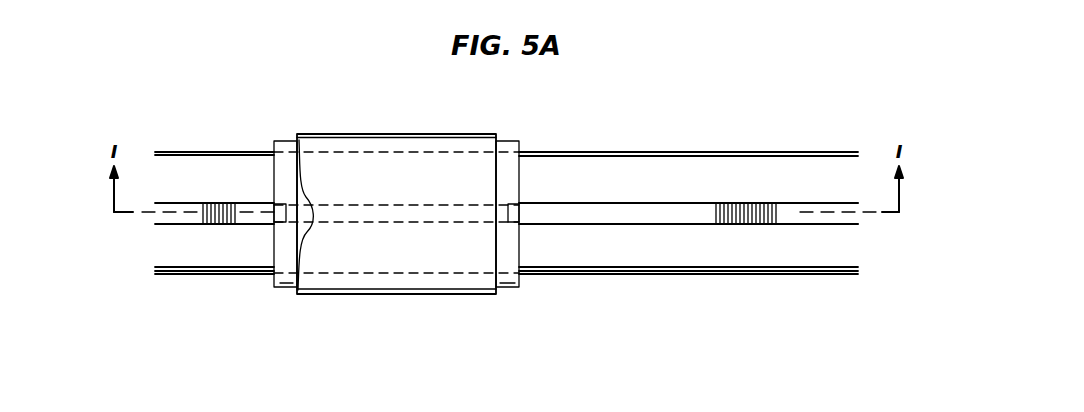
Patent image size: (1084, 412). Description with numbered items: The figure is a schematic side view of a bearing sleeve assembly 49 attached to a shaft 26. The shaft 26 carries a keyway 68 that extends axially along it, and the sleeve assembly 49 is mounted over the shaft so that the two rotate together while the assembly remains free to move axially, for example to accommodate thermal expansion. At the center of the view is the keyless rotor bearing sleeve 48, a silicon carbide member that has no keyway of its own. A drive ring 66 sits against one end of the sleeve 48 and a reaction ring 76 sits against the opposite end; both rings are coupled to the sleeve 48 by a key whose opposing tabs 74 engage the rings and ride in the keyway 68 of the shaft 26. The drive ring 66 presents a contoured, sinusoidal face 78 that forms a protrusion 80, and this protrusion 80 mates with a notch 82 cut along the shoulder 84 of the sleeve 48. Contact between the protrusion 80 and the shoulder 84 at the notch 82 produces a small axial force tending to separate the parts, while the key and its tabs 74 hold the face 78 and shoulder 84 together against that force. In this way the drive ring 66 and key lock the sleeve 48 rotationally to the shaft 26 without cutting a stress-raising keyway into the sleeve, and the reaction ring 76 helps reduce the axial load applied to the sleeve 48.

The shaft 26 is at (762, 152).
The keyless rotor bearing sleeve 48 is at (455, 133).
The sleeve assembly 49 is at (516, 117).
The drive ring 66 is at (288, 140).
The keyway 68 is at (688, 217).
The key tabs 74 is at (279, 212).
The reaction ring 76 is at (509, 288).
The face 78 is at (298, 162).
The protrusion 80 is at (301, 212).
The notch 82 is at (297, 228).
The shoulder 84 is at (298, 266).